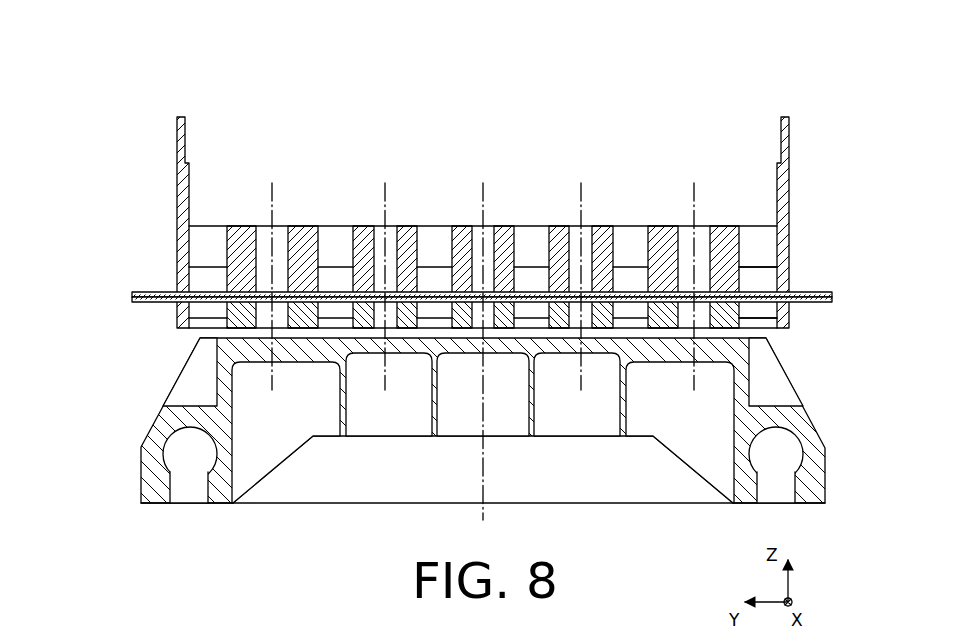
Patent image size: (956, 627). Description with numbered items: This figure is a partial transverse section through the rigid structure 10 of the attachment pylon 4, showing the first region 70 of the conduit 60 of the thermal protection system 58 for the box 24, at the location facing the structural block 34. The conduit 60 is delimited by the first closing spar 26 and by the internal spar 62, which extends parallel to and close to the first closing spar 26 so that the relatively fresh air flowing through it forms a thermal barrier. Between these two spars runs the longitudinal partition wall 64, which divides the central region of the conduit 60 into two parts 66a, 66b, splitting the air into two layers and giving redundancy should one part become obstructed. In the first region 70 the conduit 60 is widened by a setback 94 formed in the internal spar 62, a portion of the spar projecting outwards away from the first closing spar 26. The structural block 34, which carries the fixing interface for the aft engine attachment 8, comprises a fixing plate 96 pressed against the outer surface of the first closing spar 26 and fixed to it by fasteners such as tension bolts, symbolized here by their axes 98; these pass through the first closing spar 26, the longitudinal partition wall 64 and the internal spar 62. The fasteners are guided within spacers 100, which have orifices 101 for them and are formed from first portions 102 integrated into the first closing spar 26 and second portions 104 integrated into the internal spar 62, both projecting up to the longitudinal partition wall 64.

The box 24 is at (445, 294).
The rigid structure 10 is at (445, 294).
The attachment pylon 4 is at (445, 294).
The thermal protection system 58 is at (621, 84).
The internal spar 62 is at (209, 226).
The setback 94 is at (758, 233).
The conduit 60 is at (440, 272).
The first region 70 is at (207, 273).
The orifices 101 is at (572, 232).
The part of the conduit 66a is at (632, 274).
The part of the conduit 66b is at (424, 274).
The spacers 100 is at (86, 275).
The second portions 104 is at (224, 290).
The first portions 102 is at (226, 303).
The longitudinal partition wall 64 is at (758, 293).
The first closing spar 26 is at (760, 312).
The aft engine attachment 8 is at (136, 482).
The structural block 34 is at (792, 369).
The fixing plate 96 is at (237, 338).
The axes 98 is at (274, 196).